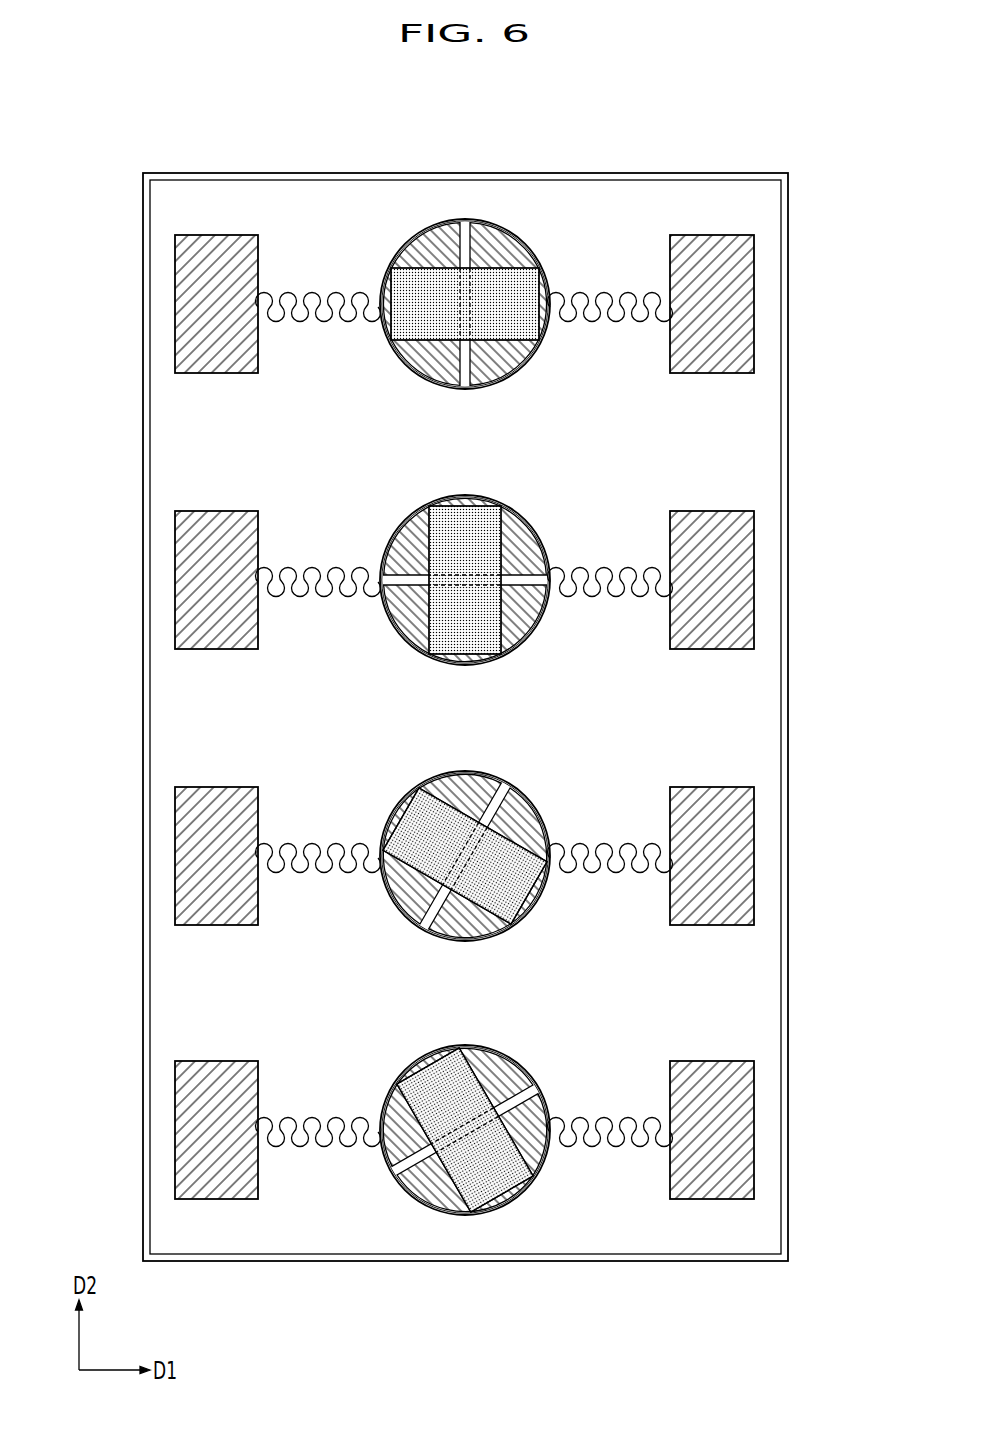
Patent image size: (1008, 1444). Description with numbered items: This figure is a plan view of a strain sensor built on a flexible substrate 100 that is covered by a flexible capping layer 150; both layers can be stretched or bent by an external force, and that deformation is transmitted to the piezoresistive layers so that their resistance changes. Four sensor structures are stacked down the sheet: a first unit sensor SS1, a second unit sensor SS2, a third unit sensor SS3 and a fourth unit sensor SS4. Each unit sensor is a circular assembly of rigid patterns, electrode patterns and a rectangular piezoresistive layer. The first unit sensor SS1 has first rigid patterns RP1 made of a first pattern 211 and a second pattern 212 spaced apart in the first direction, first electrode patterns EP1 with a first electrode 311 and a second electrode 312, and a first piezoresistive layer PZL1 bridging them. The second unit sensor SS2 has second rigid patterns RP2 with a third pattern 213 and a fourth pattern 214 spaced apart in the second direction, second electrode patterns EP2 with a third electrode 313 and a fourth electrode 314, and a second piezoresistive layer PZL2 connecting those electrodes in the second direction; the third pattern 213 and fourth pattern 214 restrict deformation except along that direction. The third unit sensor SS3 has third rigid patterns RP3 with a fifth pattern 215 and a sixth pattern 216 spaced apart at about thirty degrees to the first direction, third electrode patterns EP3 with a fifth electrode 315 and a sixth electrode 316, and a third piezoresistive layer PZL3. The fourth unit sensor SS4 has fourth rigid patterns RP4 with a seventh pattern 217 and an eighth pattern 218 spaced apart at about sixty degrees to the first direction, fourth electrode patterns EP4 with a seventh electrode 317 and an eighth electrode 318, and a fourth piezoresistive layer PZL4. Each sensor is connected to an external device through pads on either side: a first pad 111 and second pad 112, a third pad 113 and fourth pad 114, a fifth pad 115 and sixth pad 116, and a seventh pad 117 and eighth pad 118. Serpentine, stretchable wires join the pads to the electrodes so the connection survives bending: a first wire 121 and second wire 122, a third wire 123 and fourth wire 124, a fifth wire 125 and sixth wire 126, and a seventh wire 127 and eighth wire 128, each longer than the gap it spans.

The flexible substrate 100 is at (786, 211).
The flexible capping layer 150 is at (768, 244).
The first pad 111 is at (186, 300).
The second pad 112 is at (745, 304).
The third pad 113 is at (188, 578).
The fourth pad 114 is at (745, 579).
The fifth pad 115 is at (188, 854).
The sixth pad 116 is at (745, 855).
The seventh pad 117 is at (188, 1128).
The eighth pad 118 is at (745, 1129).
The first wire 121 is at (322, 291).
The second wire 122 is at (607, 291).
The third wire 123 is at (325, 566).
The fourth wire 124 is at (605, 566).
The fifth wire 125 is at (325, 842).
The sixth wire 126 is at (605, 842).
The seventh wire 127 is at (312, 1146).
The eighth wire 128 is at (612, 1146).
The first pattern 211 is at (401, 357).
The second pattern 212 is at (483, 391).
The third pattern 213 is at (378, 558).
The fourth pattern 214 is at (483, 667).
The fifth pattern 215 is at (399, 908).
The sixth pattern 216 is at (483, 943).
The seventh pattern 217 is at (470, 1046).
The eighth pattern 218 is at (541, 1086).
The first electrode 311 is at (434, 230).
The second electrode 312 is at (492, 230).
The third electrode 313 is at (470, 499).
The fourth electrode 314 is at (539, 571).
The fifth electrode 315 is at (481, 774).
The sixth electrode 316 is at (531, 800).
The seventh electrode 317 is at (404, 1212).
The eighth electrode 318 is at (468, 1214).
The first rigid patterns RP1 is at (314, 350).
The second rigid patterns RP2 is at (314, 627).
The third rigid patterns RP3 is at (314, 902).
The fourth rigid patterns RP4 is at (575, 983).
The first electrode patterns EP1 is at (510, 119).
The second electrode patterns EP2 is at (575, 433).
The third electrode patterns EP3 is at (575, 708).
The fourth electrode patterns EP4 is at (460, 1318).
The first piezoresistive layer PZL1 is at (426, 272).
The second piezoresistive layer PZL2 is at (447, 514).
The third piezoresistive layer PZL3 is at (447, 790).
The fourth piezoresistive layer PZL4 is at (497, 1196).
The first unit sensor SS1 is at (524, 219).
The second unit sensor SS2 is at (384, 509).
The third unit sensor SS3 is at (384, 785).
The fourth unit sensor SS4 is at (515, 1222).